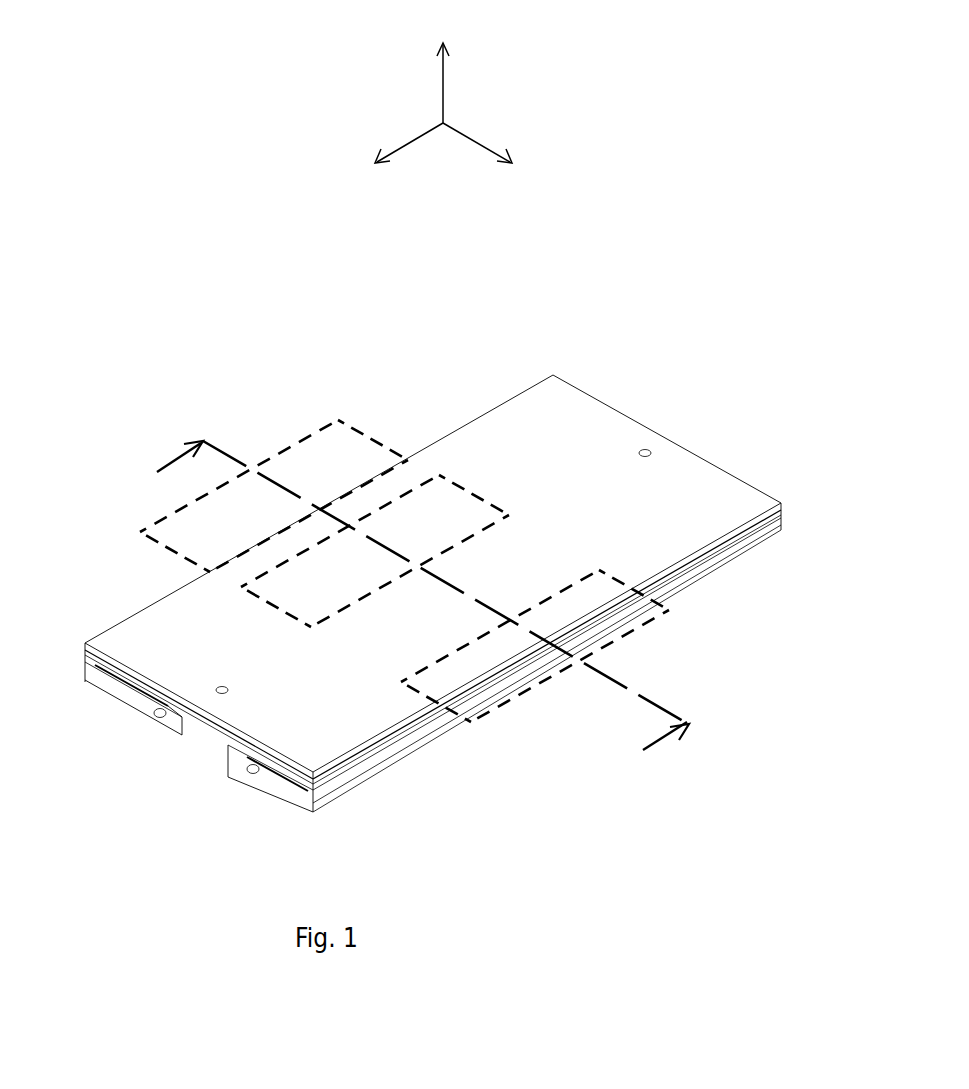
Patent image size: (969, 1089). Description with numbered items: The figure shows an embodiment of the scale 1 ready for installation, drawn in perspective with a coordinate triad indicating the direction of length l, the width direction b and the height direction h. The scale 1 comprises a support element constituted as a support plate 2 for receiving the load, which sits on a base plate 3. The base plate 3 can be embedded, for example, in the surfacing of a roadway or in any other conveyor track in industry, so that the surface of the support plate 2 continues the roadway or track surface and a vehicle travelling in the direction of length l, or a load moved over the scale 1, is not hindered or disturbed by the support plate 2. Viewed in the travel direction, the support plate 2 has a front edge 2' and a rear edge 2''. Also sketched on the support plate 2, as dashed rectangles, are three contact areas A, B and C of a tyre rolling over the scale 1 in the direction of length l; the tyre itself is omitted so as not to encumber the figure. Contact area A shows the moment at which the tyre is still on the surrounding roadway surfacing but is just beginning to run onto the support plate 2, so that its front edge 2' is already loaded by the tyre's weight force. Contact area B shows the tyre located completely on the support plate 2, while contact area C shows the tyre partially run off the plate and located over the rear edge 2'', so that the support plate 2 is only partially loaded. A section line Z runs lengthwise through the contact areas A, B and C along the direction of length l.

The scale 1 is at (122, 307).
The support plate 2 is at (482, 539).
The front edge 2' is at (433, 523).
The rear edge 2'' is at (482, 614).
The base plate 3 is at (282, 788).
The contact area A is at (178, 553).
The contact area B is at (277, 607).
The contact area C is at (440, 703).
The section line Z- Z is at (410, 612).
The height axis h is at (443, 65).
The width axis b is at (396, 153).
The direction of length l is at (490, 153).